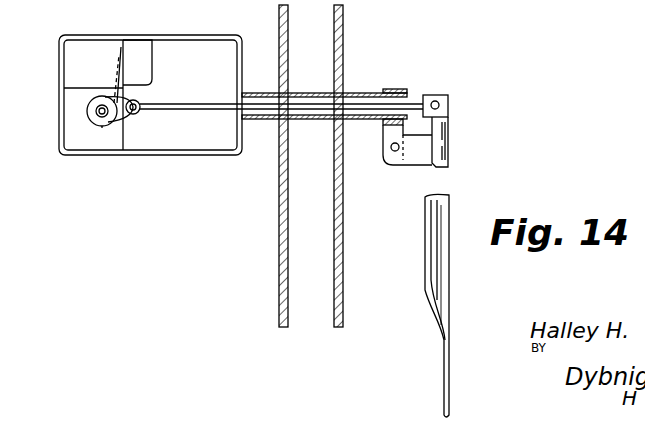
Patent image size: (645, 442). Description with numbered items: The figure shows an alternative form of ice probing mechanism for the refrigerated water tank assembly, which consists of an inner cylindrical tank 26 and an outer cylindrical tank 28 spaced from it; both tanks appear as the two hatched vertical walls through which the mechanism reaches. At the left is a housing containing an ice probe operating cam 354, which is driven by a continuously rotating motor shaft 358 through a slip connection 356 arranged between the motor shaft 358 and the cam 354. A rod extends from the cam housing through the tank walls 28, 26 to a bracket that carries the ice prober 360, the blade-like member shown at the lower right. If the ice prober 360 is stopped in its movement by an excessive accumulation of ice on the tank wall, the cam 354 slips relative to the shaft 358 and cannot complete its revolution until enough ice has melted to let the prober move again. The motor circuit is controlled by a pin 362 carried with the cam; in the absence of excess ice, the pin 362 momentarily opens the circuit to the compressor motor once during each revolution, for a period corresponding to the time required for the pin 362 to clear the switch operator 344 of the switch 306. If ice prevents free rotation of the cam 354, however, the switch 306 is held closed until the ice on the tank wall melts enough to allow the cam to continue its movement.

The inner cylindrical tank 26 is at (343, 258).
The outer cylindrical tank 28 is at (279, 247).
The switch 306 is at (144, 61).
The switch operator 344 is at (98, 73).
The ice probe operating cam 354 is at (118, 117).
The slip connection 356 is at (100, 126).
The motor shaft 358 is at (90, 113).
The ice prober 360 is at (430, 292).
The pin 362 is at (106, 100).